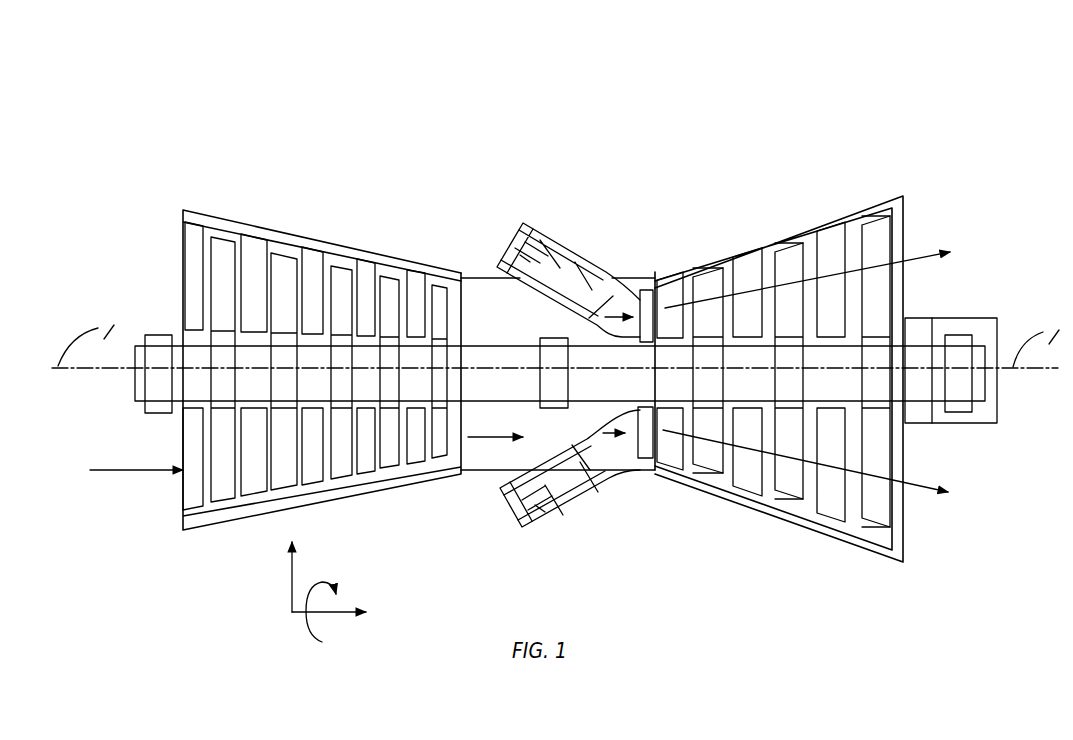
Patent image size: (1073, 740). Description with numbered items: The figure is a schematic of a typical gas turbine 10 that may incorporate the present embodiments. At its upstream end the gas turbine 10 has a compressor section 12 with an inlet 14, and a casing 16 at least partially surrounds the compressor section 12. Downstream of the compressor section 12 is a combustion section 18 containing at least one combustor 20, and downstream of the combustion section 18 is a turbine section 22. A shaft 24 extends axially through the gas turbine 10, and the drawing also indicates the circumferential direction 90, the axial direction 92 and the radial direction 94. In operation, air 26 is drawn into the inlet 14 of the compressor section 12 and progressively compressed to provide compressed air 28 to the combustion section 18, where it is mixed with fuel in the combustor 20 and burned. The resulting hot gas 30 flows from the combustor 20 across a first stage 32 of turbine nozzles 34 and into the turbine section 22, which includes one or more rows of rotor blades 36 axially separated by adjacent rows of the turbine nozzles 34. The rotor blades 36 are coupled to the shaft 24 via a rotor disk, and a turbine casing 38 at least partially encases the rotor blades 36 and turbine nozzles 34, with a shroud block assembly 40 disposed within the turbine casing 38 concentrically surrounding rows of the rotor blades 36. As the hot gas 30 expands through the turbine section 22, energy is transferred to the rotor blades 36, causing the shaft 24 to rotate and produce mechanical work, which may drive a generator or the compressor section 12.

The gas turbine 10 is at (506, 72).
The compressor section 12 is at (458, 270).
The inlet 14 is at (183, 266).
The casing 16 is at (197, 535).
The combustion section 18 is at (655, 272).
The combustor 20 is at (540, 228).
The turbine section 22 is at (905, 196).
The shaft 24 is at (938, 335).
The air 26 is at (137, 468).
The compressed air 28 is at (477, 434).
The hot gas 30 is at (568, 280).
The first stage 32 is at (666, 485).
The turbine nozzles 34 is at (753, 267).
The rotor blades 36 is at (705, 457).
The turbine casing 38 is at (845, 540).
The shroud block assembly 40 is at (789, 242).
The circumferential direction 90 is at (307, 630).
The axial direction 92 is at (347, 600).
The radial direction 94 is at (288, 575).